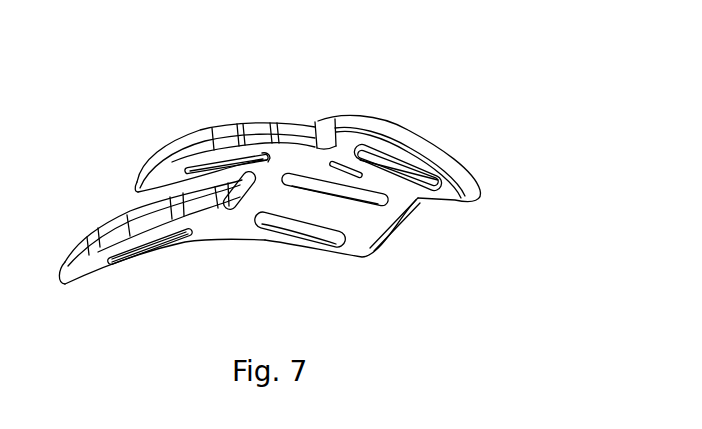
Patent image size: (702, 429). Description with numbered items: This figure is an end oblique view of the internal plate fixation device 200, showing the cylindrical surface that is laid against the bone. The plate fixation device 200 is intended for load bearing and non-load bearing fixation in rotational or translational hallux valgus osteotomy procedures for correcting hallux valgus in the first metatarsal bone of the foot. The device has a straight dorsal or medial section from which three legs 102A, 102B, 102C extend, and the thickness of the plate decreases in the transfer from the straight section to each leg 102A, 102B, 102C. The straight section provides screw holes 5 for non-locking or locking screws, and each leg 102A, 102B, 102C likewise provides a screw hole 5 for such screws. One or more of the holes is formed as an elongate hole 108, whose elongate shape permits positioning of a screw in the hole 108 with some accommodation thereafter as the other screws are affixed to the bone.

The internal plate fixation device 200 is at (216, 82).
The leg 102A is at (436, 137).
The leg 102B is at (181, 138).
The leg 102C is at (96, 279).
The elongate hole 108 is at (297, 223).
The screw hole 5 is at (337, 193).